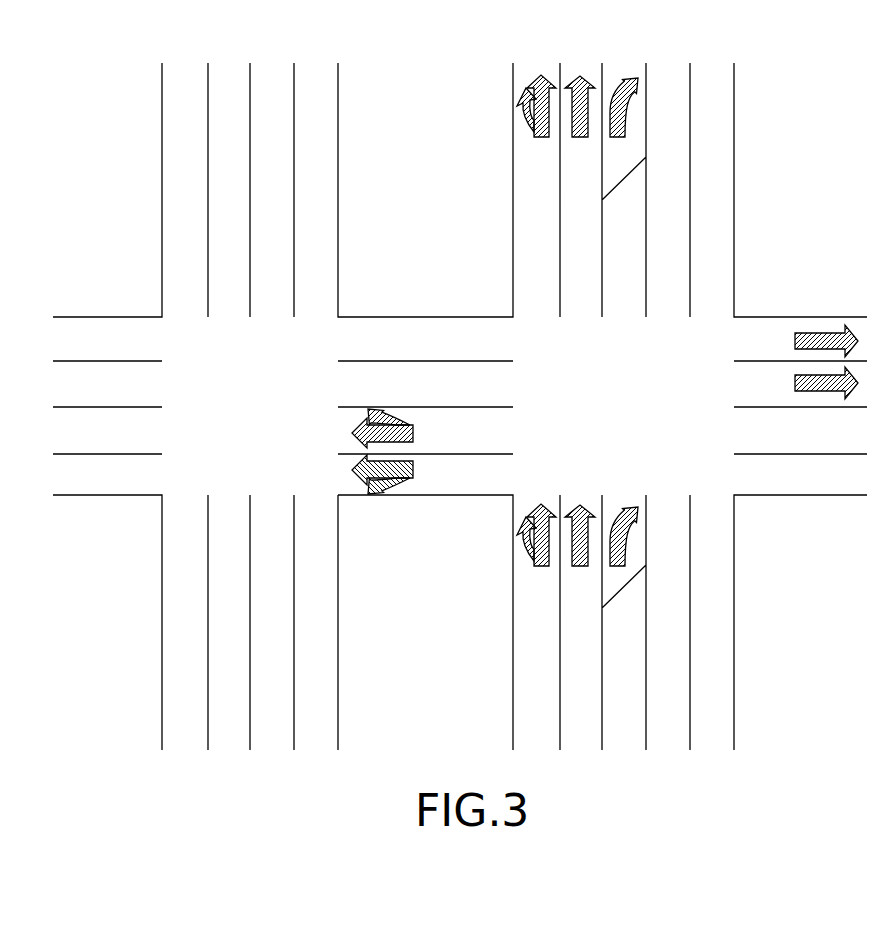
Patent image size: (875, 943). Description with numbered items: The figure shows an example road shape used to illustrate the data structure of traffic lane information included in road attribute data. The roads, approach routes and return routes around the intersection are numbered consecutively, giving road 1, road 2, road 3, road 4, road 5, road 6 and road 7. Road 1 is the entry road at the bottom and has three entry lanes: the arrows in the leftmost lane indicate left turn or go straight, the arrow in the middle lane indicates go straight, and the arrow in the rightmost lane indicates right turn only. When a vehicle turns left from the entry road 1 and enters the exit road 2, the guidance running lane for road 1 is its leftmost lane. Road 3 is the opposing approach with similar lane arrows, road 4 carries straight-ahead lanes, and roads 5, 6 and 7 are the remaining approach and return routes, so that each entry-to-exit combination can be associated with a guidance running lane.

The road 1 is at (581, 622).
The road 2 is at (397, 451).
The road 3 is at (581, 190).
The road 4 is at (808, 361).
The road 5 is at (107, 602).
The road 6 is at (151, 190).
The road 7 is at (265, 622).